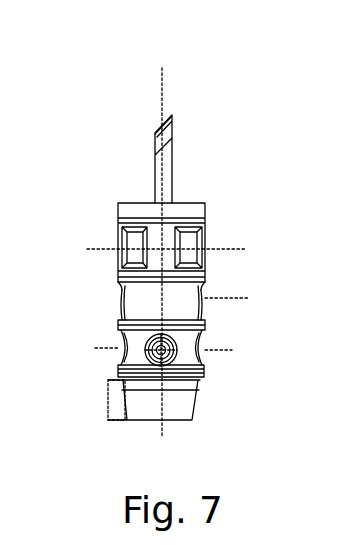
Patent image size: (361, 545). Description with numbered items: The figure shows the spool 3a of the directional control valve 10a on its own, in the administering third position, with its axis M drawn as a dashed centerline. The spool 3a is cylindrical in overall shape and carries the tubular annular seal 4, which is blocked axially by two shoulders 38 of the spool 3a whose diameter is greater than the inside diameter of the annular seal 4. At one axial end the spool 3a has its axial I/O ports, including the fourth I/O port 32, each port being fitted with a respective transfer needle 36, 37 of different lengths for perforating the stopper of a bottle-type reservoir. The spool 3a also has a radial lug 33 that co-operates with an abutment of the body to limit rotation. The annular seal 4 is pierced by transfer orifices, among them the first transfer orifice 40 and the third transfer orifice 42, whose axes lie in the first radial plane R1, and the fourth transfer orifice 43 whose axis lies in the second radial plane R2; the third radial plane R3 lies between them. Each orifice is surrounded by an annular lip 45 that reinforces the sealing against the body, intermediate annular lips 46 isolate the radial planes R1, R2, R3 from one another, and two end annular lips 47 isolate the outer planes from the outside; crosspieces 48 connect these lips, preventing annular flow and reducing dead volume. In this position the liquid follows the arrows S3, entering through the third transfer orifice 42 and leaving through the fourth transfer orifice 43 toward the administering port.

The center axis M is at (163, 76).
The directional control valve 10a is at (254, 66).
The transfer needle 36 is at (163, 153).
The transfer needle 37 is at (157, 128).
The shoulders 38 is at (204, 211).
The annular seal 4 is at (190, 243).
The spool 3a is at (200, 192).
The crosspieces 48 is at (161, 242).
The intermediate annular lips 46 is at (206, 323).
The third transfer orifice 42 is at (210, 342).
The annular lip 45 is at (119, 305).
The radial lug 33 is at (115, 403).
The fourth I/O port 32 is at (172, 380).
The first transfer orifice 40 is at (155, 368).
The end annular lips 47 is at (117, 222).
The second radial plane R2 is at (97, 249).
The fourth transfer orifice 43 is at (111, 290).
The third radial plane R3 is at (72, 299).
The arrows S3 is at (114, 297).
The first radial plane R1 is at (102, 350).